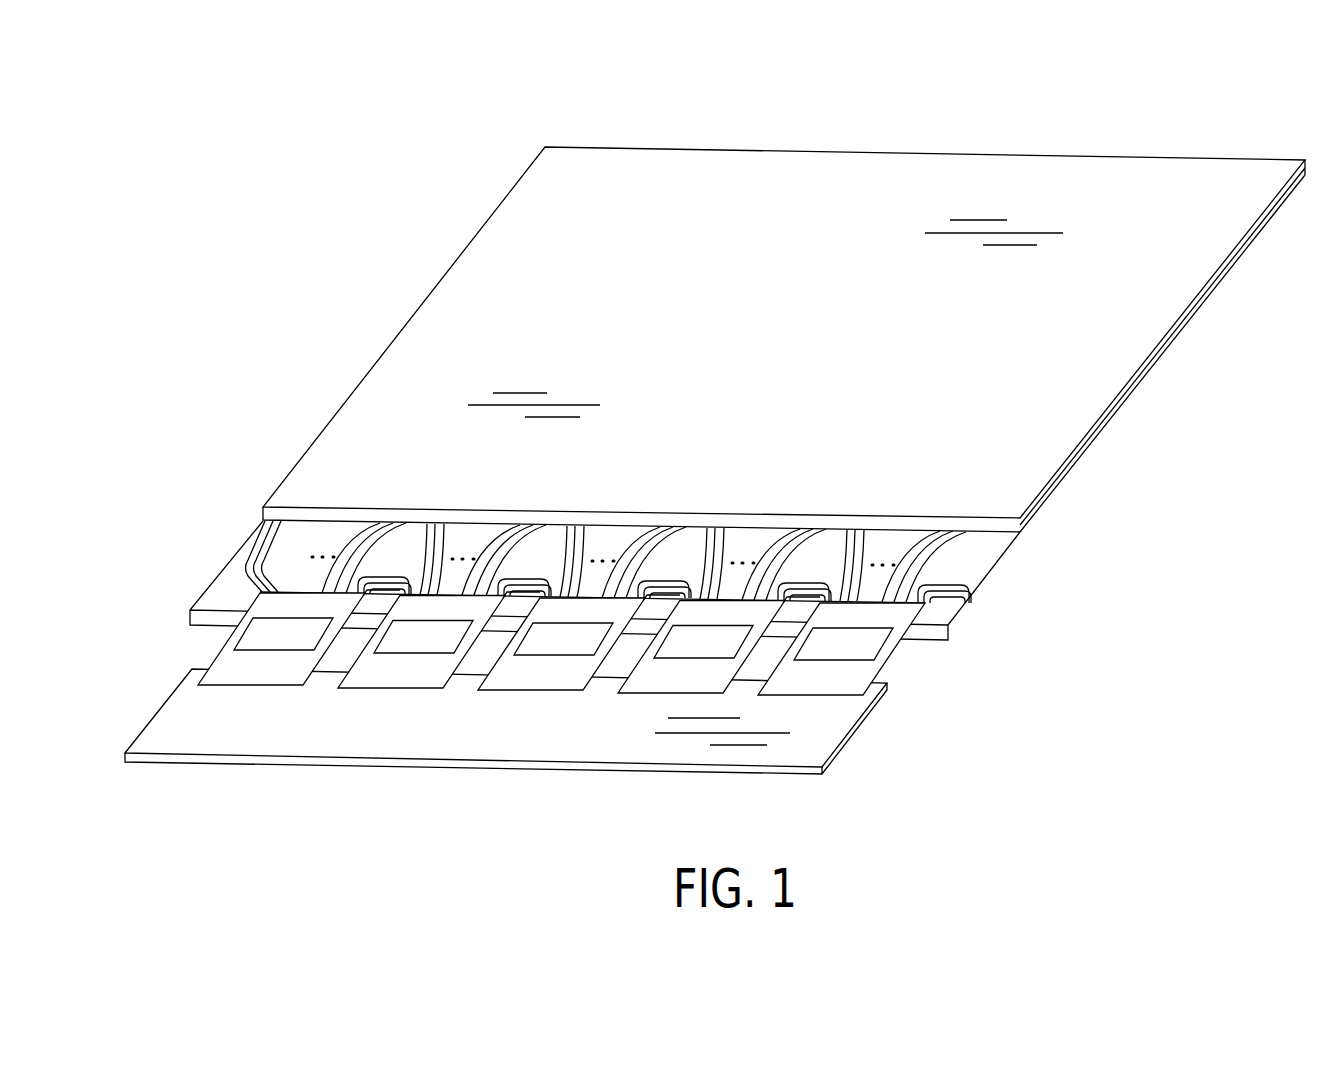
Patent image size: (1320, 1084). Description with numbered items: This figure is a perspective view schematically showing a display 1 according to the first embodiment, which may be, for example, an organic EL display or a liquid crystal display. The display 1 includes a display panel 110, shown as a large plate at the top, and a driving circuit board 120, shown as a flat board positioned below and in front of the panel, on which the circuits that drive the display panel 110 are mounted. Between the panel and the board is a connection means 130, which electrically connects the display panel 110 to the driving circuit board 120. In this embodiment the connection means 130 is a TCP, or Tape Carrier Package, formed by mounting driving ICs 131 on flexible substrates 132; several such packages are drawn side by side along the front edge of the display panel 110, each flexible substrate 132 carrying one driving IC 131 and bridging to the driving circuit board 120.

The display 1 is at (1187, 157).
The display panel 110 is at (1179, 360).
The driving circuit board 120 is at (543, 749).
The connection means 130 is at (524, 692).
The driving IC 131 is at (870, 643).
The flexible substrate 132 is at (837, 683).